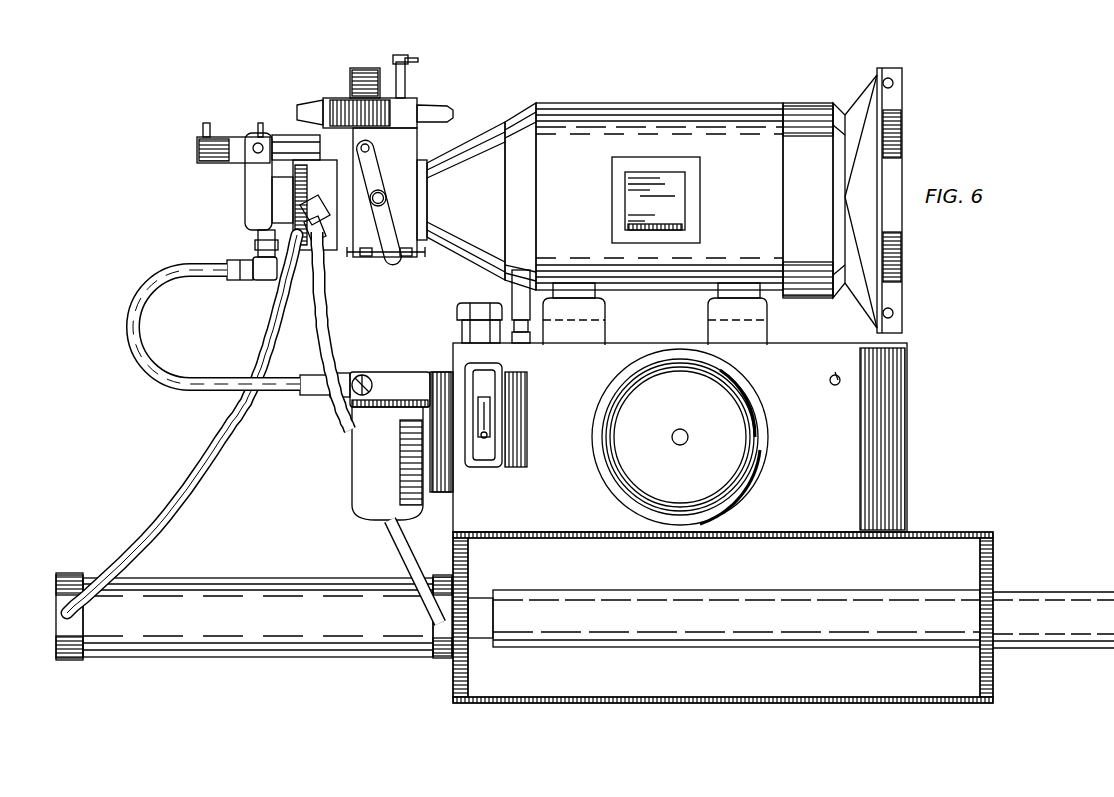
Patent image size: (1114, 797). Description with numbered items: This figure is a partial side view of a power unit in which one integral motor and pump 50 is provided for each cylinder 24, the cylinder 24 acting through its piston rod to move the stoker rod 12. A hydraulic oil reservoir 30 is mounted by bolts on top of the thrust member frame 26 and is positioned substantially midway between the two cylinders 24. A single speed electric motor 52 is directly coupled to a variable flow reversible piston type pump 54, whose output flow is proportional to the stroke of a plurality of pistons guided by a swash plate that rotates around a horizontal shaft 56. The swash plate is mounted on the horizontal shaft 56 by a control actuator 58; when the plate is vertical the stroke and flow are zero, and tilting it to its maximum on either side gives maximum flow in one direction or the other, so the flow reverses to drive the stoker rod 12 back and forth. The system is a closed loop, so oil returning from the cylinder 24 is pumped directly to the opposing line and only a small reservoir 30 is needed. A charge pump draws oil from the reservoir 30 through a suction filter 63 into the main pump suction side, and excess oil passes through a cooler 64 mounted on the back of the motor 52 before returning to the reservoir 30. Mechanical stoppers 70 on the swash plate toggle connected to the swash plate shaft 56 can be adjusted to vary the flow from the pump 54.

The stoker rod 12 is at (1053, 623).
The cylinder 24 is at (223, 590).
The thrust member frame 26 is at (965, 532).
The hydraulic oil reservoir 30 is at (885, 432).
The integral motor and pump 50 is at (631, 205).
The single speed electric motor 52 is at (723, 118).
The variable flow reversible piston type pump 54 is at (320, 178).
The horizontal shaft 56 is at (384, 196).
The control actuator 58 is at (197, 158).
The suction filter 63 is at (365, 467).
The cooler 64 is at (892, 283).
The mechanical stoppers 70 is at (407, 257).